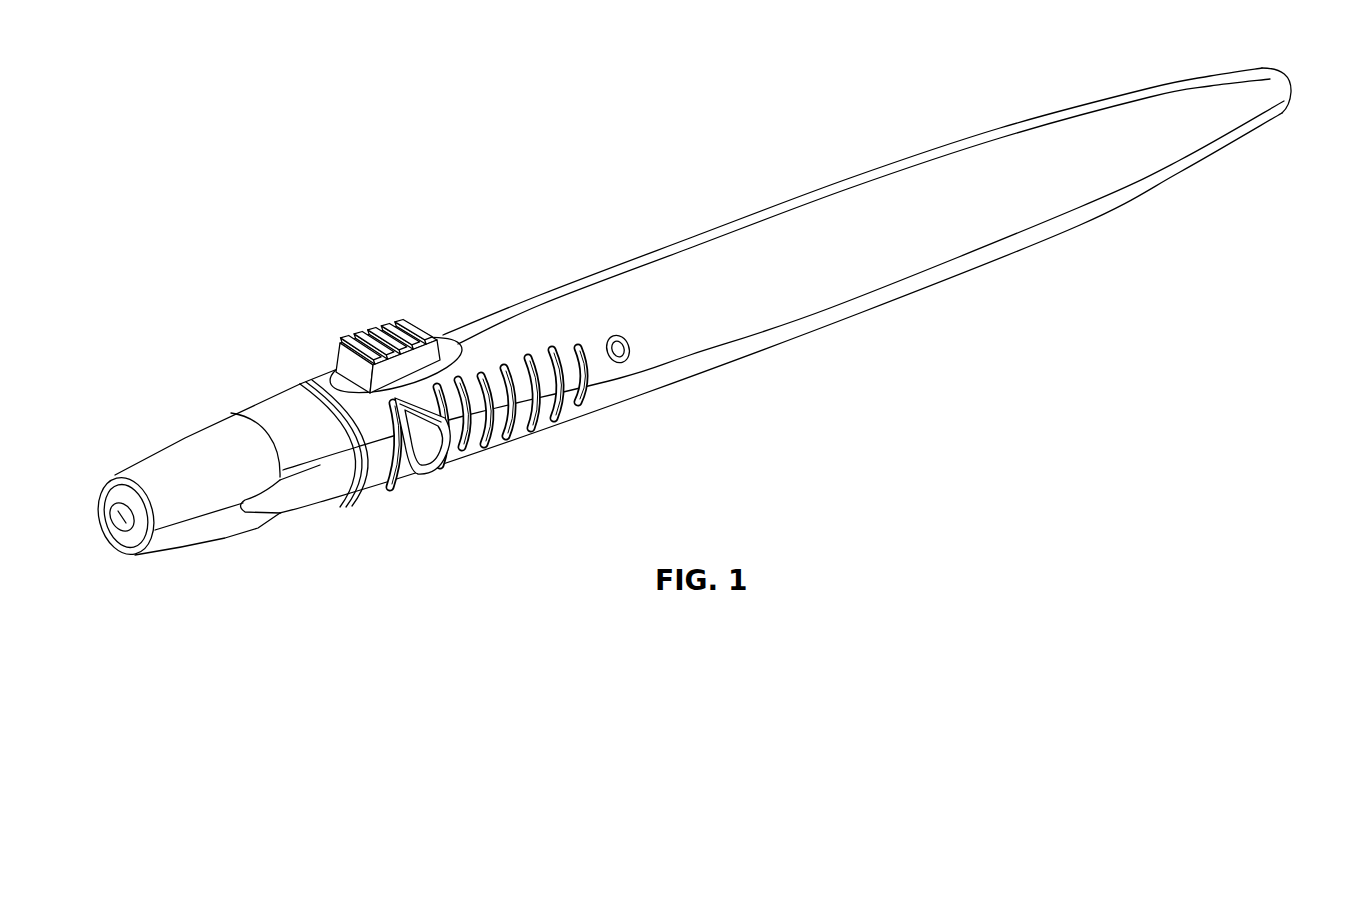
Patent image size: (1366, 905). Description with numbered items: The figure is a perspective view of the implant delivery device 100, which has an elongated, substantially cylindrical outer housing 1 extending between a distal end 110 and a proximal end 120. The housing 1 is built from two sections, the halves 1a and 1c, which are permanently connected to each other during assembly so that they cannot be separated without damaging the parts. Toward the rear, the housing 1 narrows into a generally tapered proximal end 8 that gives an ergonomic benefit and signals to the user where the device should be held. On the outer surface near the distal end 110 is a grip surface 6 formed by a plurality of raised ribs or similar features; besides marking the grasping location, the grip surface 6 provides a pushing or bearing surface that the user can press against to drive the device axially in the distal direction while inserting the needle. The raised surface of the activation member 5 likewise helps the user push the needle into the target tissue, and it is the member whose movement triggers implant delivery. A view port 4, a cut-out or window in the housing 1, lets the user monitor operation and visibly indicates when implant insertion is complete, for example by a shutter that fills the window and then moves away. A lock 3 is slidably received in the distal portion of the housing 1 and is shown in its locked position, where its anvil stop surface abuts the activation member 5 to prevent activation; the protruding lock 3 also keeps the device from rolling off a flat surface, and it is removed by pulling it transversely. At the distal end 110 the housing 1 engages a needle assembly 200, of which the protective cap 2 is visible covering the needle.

The delivery device 100 is at (490, 244).
The outer housing 1 is at (808, 270).
The housing half 1a is at (988, 135).
The housing half 1c is at (1033, 193).
The proximal end 120 is at (1350, 79).
The tapered proximal end 8 is at (1132, 157).
The distal end 110 is at (108, 577).
The protective cap 2 is at (292, 458).
The needle assembly 200 is at (165, 422).
The lock 3 is at (452, 447).
The view port 4 is at (622, 360).
The activation member 5 is at (388, 335).
The grip surface 6 is at (515, 420).